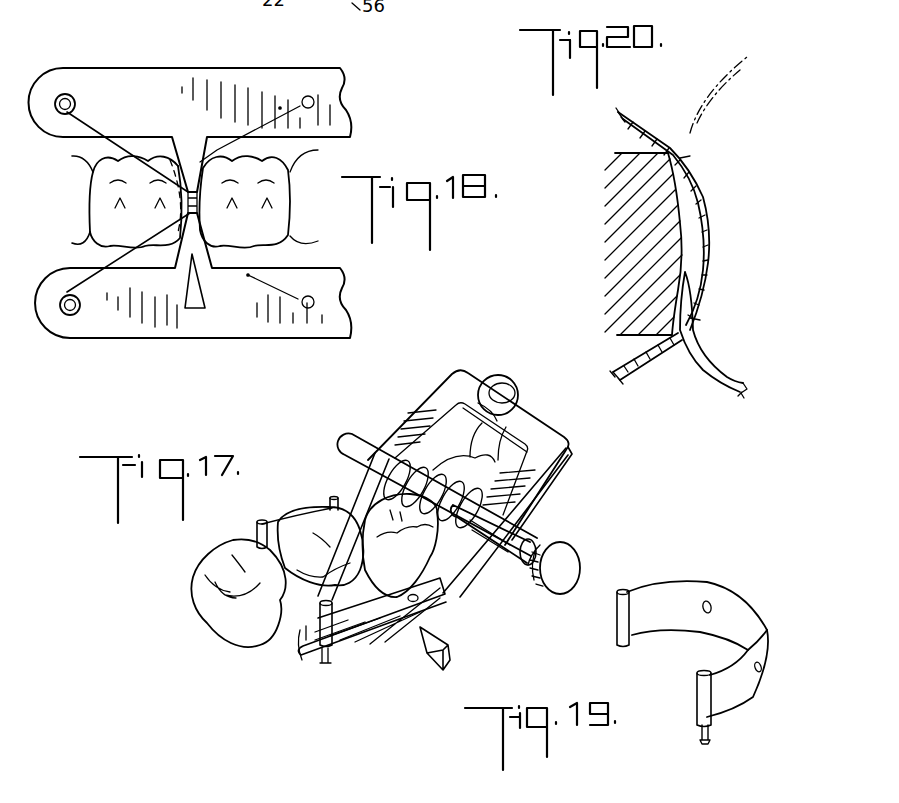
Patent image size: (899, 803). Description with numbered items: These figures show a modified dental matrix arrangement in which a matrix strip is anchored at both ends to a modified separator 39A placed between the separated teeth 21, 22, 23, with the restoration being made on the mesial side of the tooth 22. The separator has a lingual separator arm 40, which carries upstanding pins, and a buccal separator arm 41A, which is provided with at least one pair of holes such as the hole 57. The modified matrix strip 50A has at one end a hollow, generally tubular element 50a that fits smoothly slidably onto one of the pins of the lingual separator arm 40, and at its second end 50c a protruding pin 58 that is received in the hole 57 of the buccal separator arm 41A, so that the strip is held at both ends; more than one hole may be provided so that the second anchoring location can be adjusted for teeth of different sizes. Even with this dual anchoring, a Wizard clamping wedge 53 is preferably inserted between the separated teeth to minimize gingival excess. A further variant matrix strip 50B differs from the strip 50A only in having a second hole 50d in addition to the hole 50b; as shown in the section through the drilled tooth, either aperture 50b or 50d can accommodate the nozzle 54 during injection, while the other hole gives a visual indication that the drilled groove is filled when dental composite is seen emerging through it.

In FIG. 18, the tooth 21 is at (88, 172).
In FIG. 18, the tooth 22 is at (103, 232).
In FIG. 18, the tooth 23 is at (270, 233).
In FIG. 17, the modified separator 39A is at (499, 369).
In FIG. 18, the lingual separator arm 40 is at (237, 78).
In FIG. 18, the buccal separator arm 41A is at (245, 333).
In FIG. 18, the modified matrix strip 50A is at (90, 125).
In FIG. 17, the modified matrix strip 50A is at (272, 517).
In FIG. 18, the hollow tubular element 50a is at (73, 97).
In FIG. 17, the hollow tubular element 50a is at (257, 526).
In FIG. 19, the hollow tubular element 50a is at (617, 623).
In FIG. 20, the matrix strip 50B is at (712, 230).
In FIG. 19, the matrix strip 50B is at (777, 580).
In FIG. 20, the hole or aperture 50b is at (700, 320).
In FIG. 19, the hole or aperture 50b is at (762, 673).
In FIG. 19, the second end of matrix strip 50c is at (697, 688).
In FIG. 20, the second hole or aperture 50d is at (690, 157).
In FIG. 19, the second hole or aperture 50d is at (708, 601).
In FIG. 18, the clamping wedge 53 is at (190, 307).
In FIG. 17, the clamping wedge 53 is at (428, 660).
In FIG. 20, the nozzle 54 is at (710, 110).
In FIG. 18, the hole 57 is at (310, 308).
In FIG. 17, the hole 57 is at (445, 603).
In FIG. 18, the protruding pin 58 is at (72, 313).
In FIG. 17, the protruding pin 58 is at (323, 667).
In FIG. 19, the protruding pin 58 is at (702, 740).